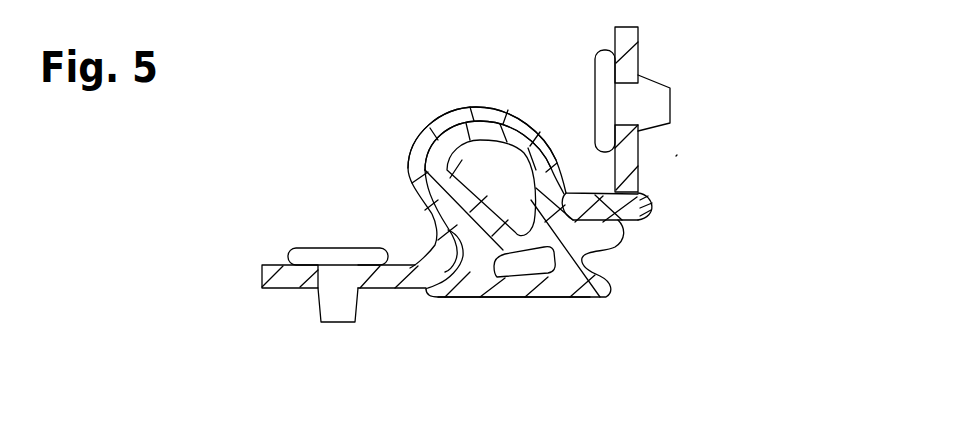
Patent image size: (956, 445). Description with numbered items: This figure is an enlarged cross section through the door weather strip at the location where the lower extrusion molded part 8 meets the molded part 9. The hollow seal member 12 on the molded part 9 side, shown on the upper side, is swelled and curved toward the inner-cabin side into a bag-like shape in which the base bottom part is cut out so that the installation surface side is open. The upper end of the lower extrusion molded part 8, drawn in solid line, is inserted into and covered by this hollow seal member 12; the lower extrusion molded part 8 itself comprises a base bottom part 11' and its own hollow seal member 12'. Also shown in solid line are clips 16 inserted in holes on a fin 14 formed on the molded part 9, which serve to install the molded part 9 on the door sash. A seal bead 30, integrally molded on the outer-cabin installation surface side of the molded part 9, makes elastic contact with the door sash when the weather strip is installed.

The lower extrusion molded part 8 is at (462, 307).
The molded part 9 is at (675, 157).
The base bottom part 11' is at (514, 343).
The hollow seal member 12 is at (470, 94).
The hollow seal member 12' is at (488, 89).
The fin 14 is at (632, 58).
The clips 16 is at (603, 104).
The seal bead 30 is at (653, 208).